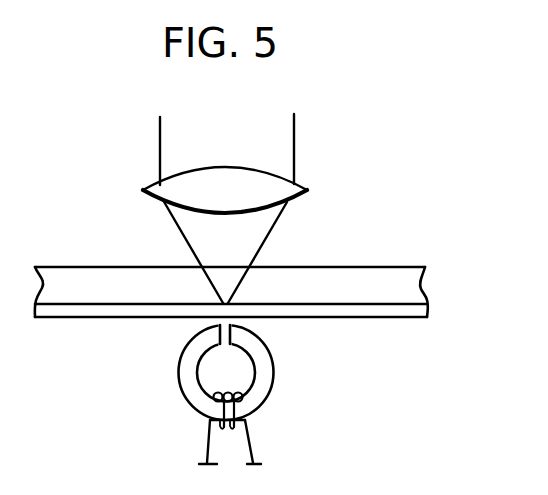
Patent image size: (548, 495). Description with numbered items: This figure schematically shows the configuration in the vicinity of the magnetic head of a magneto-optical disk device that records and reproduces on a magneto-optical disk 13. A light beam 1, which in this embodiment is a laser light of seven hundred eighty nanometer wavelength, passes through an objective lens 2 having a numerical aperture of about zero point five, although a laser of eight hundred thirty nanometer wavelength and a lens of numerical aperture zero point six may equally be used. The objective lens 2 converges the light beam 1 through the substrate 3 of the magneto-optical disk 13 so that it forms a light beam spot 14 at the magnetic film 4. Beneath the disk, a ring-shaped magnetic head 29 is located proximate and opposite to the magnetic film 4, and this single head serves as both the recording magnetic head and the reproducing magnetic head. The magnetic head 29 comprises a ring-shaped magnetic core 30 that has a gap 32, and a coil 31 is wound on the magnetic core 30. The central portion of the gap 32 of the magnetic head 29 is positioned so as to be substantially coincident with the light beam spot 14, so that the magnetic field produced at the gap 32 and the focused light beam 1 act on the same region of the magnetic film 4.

The light beam 1 is at (278, 147).
The objective lens 2 is at (307, 189).
The substrate 3 is at (373, 273).
The magnetic film 4 is at (407, 312).
The magneto-optical disk 13 is at (439, 244).
The light beam spot 14 is at (226, 302).
The magnetic head 29 is at (284, 352).
The magnetic core 30 is at (257, 390).
The coil 31 is at (208, 447).
The gap 32 is at (218, 333).